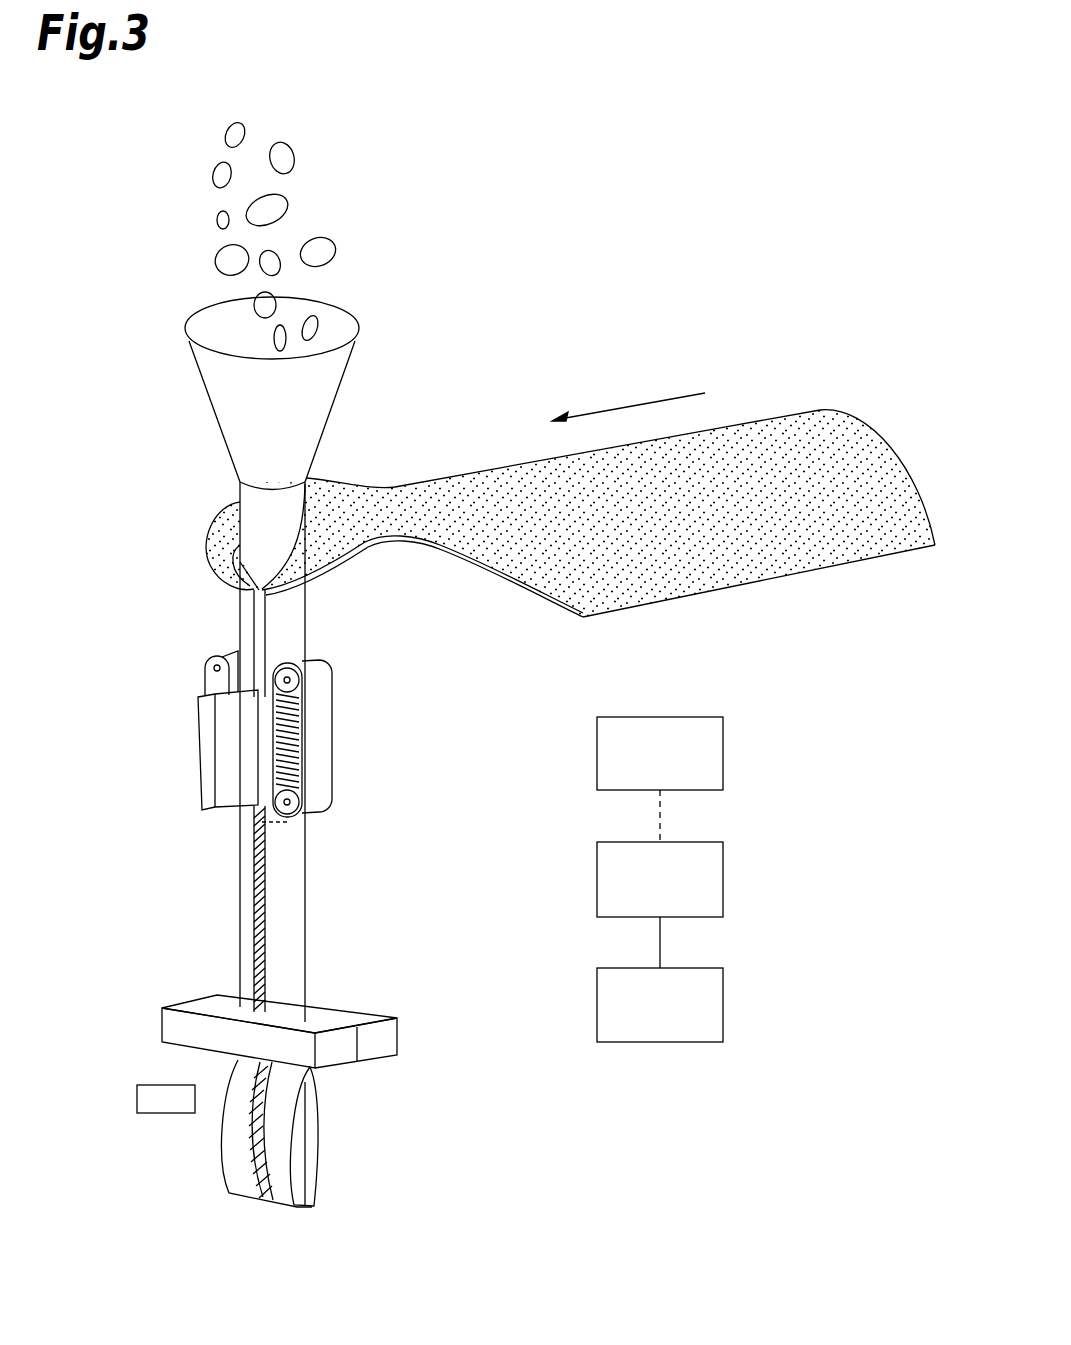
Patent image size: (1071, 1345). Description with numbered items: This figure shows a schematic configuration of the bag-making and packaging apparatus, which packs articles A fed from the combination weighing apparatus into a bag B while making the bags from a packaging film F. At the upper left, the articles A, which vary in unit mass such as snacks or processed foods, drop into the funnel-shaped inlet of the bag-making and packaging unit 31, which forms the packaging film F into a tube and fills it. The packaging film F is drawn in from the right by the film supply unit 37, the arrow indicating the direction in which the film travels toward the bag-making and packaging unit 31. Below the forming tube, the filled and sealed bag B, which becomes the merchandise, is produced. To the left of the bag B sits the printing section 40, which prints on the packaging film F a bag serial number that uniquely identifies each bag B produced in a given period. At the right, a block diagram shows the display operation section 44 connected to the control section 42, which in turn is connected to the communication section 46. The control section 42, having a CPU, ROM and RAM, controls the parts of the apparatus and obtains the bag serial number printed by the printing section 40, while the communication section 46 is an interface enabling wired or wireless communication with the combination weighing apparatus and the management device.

The bag-making and packaging unit 31 is at (398, 253).
The film supply unit 37 is at (574, 372).
The printing section 40 is at (137, 1098).
The control section 42 is at (723, 878).
The display operation section 44 is at (723, 753).
The communication section 46 is at (723, 1005).
The article A is at (167, 113).
The packaging film F is at (758, 462).
The bag B is at (312, 1143).